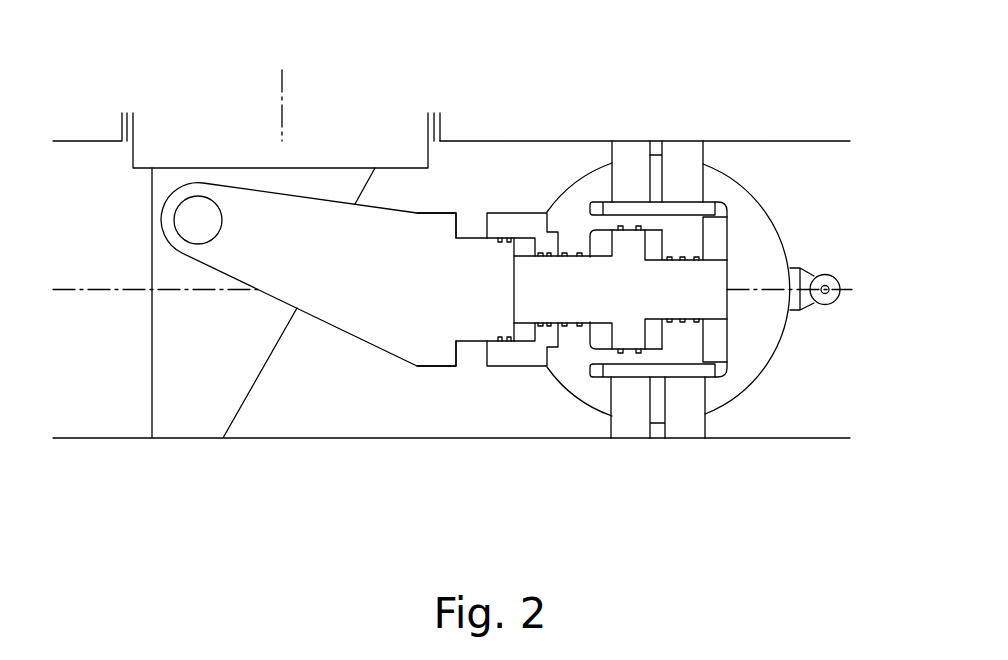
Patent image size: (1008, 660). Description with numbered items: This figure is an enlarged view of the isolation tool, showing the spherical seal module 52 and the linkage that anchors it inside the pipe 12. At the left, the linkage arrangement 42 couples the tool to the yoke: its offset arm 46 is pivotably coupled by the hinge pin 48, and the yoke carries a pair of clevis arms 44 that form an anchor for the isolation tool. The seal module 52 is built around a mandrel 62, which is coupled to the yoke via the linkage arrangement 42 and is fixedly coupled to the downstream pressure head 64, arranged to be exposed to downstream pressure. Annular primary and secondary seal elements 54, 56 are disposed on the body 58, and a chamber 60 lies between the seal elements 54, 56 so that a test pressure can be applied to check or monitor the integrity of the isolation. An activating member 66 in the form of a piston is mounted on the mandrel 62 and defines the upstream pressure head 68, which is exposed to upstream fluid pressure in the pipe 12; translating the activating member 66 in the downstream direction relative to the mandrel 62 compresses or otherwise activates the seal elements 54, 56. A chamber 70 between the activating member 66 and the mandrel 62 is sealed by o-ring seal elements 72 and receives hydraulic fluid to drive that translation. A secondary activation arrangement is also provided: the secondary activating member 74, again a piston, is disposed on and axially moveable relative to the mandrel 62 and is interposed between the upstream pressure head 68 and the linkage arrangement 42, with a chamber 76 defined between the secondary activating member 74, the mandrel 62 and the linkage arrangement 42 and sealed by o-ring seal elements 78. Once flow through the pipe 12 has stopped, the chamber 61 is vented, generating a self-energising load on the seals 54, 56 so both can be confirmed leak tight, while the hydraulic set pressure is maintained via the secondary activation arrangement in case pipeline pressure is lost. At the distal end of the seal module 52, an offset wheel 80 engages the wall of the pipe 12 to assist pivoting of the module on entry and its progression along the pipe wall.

The pipe 12 is at (821, 140).
The linkage arrangement 42 is at (367, 357).
The clevis arms 44 is at (203, 373).
The offset arm 46 is at (268, 215).
The hinge pin 48 is at (198, 196).
The spherical seal module 52 is at (583, 417).
The primary seal element 54 is at (690, 150).
The secondary seal element 56 is at (636, 150).
The body 58 is at (657, 407).
The chamber 60 is at (656, 147).
The chamber 61 is at (722, 343).
The mandrel 62 is at (553, 307).
The downstream pressure head 64 is at (740, 196).
The activating member 66 is at (692, 350).
The upstream pressure head 68 is at (573, 198).
The chamber 70 is at (654, 338).
The seal elements 72 is at (638, 230).
The secondary activating member 74 is at (503, 223).
The chamber 76 is at (528, 247).
The seal elements 78 is at (508, 342).
The offset wheel 80 is at (828, 276).